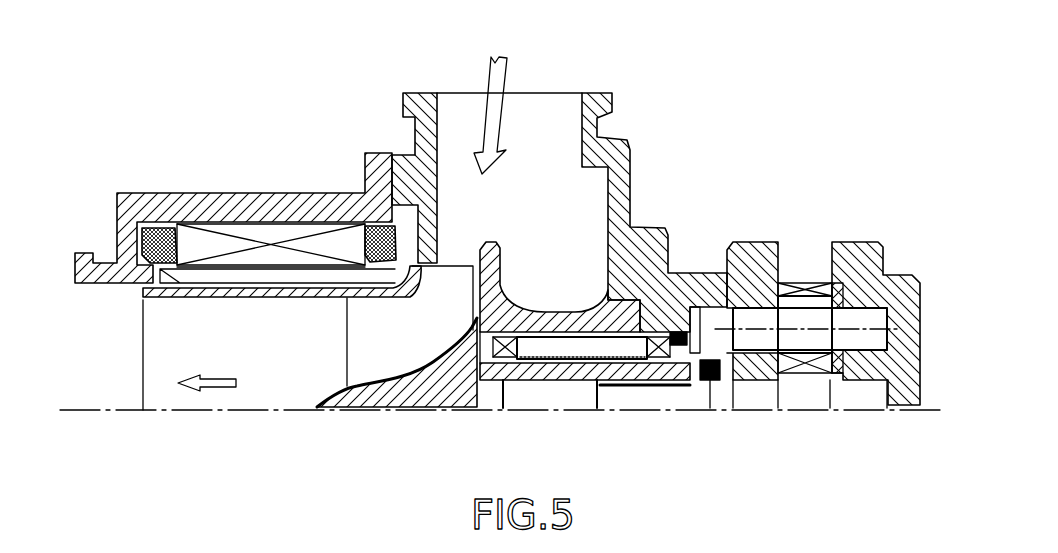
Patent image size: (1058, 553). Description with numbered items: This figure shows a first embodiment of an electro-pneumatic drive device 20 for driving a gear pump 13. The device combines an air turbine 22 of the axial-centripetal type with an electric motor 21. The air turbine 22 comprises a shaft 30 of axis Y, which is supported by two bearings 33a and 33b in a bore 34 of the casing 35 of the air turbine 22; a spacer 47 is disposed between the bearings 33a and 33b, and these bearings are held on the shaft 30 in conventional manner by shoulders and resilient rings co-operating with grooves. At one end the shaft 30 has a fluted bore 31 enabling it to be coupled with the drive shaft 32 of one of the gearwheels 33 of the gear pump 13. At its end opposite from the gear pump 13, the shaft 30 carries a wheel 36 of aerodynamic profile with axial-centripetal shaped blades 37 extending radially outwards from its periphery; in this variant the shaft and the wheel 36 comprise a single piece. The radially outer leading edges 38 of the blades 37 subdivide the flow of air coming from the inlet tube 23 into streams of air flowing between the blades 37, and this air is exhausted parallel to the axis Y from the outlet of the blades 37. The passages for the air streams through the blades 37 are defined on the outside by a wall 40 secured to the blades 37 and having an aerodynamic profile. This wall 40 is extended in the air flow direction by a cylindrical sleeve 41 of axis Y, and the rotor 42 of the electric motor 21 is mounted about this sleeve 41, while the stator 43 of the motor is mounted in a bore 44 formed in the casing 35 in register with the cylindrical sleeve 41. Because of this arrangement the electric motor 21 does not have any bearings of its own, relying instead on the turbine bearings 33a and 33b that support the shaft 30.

The gear pump 13 is at (808, 308).
The electro-pneumatic drive device 20 is at (636, 88).
The electric motor 21 is at (265, 228).
The air turbine 22 is at (325, 176).
The inlet tube 23 is at (542, 160).
The shaft 30 is at (513, 402).
The fluted bore 31 is at (588, 404).
The drive shaft 32 is at (722, 400).
The gearwheel 33 is at (808, 402).
The bearing 33a is at (468, 402).
The bearing 33b is at (672, 400).
The bore 34 is at (582, 345).
The casing 35 is at (632, 179).
The wheel 36 is at (392, 405).
The blades 37 is at (346, 337).
The leading edges 38 is at (455, 263).
The wall 40 is at (402, 298).
The cylindrical sleeve 41 is at (266, 304).
The rotor 42 is at (203, 298).
The stator 43 is at (212, 245).
The bore 44 is at (298, 210).
The spacer 47 is at (552, 402).
The axis Y is at (93, 408).